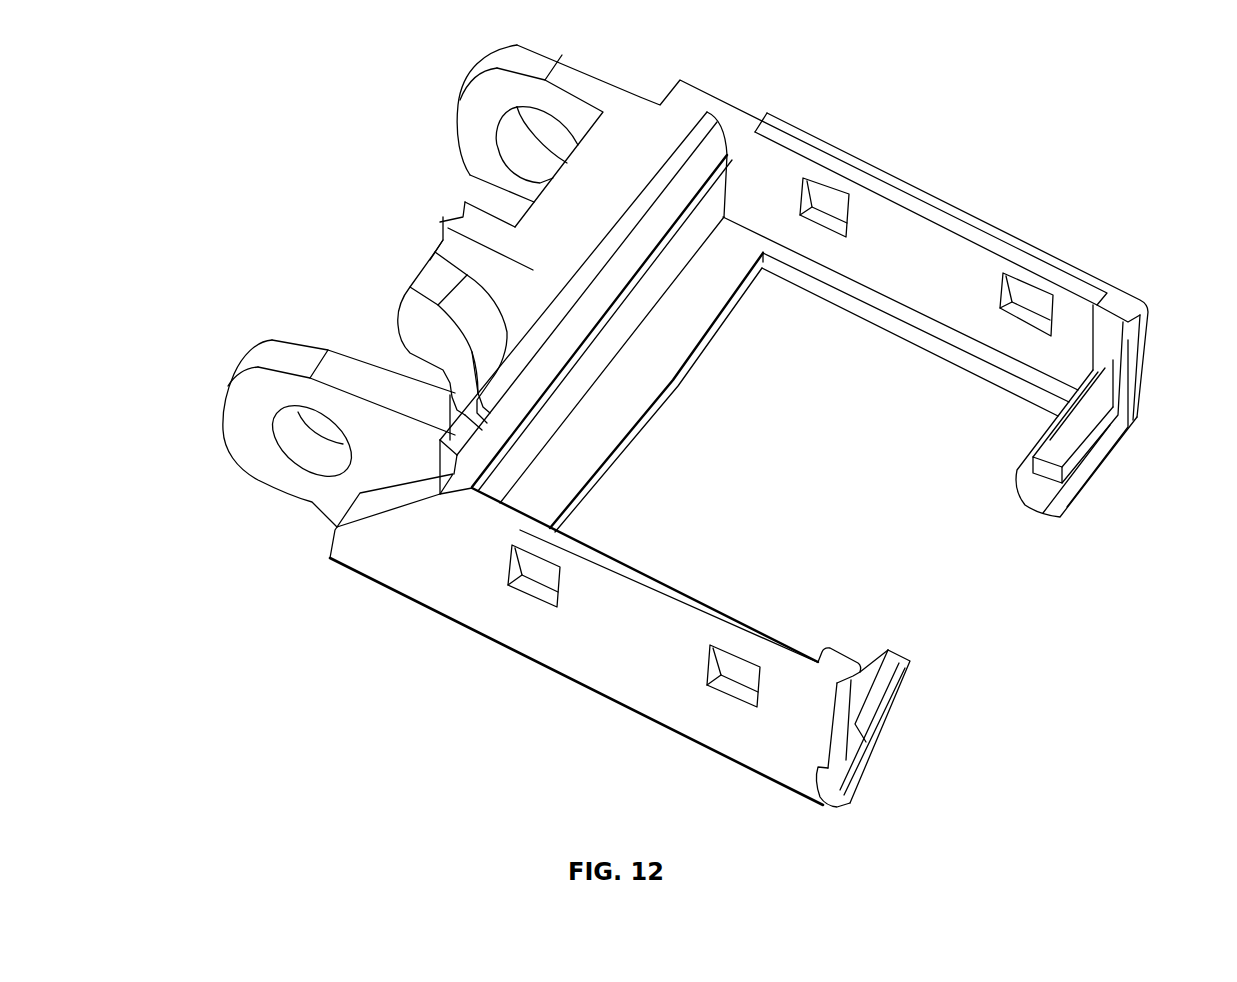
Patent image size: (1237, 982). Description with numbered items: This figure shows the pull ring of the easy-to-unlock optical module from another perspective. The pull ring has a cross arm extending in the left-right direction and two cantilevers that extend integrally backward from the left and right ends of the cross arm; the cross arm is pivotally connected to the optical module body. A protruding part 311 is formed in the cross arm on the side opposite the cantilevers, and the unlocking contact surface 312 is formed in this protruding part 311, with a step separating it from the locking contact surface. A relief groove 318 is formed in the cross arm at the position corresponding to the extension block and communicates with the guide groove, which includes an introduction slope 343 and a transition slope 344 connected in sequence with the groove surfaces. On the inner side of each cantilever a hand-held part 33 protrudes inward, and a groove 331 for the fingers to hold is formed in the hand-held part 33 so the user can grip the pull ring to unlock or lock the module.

The protruding part 311 is at (465, 202).
The unlocking contact surface 312 is at (497, 382).
The relief groove 318 is at (412, 370).
The introduction slope 343 is at (432, 281).
The transition slope 344 is at (495, 352).
The hand-held part 33 is at (1080, 413).
The groove 331 is at (1097, 460).